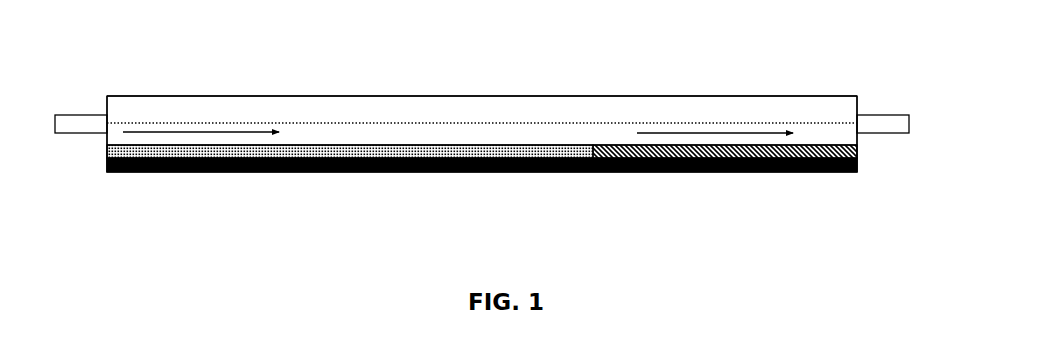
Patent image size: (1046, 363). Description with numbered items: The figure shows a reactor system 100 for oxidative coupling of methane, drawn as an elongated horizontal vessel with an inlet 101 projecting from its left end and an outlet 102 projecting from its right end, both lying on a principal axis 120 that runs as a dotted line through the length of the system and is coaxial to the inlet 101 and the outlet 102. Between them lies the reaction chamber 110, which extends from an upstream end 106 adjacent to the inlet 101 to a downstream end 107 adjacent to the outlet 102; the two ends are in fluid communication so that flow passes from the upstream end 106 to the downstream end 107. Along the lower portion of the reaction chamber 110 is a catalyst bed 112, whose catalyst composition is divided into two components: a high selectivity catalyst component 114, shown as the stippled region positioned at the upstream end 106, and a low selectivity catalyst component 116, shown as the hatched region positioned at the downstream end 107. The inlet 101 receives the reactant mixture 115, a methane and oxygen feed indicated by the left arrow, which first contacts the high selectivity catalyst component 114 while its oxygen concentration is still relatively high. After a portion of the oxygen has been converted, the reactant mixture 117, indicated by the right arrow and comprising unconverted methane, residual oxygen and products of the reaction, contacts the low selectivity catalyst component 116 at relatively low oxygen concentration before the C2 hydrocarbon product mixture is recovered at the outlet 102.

The reactor system 100 is at (176, 70).
The inlet 101 is at (84, 140).
The outlet 102 is at (890, 135).
The upstream end 106 is at (130, 100).
The downstream end 107 is at (831, 105).
The reaction chamber 110 is at (498, 103).
The catalyst bed 112 is at (315, 172).
The high selectivity catalyst component 114 is at (452, 145).
The reactant mixture 115 is at (208, 133).
The low selectivity catalyst component 116 is at (683, 172).
The reactant mixture 117 is at (722, 133).
The principal axis 120 is at (365, 125).